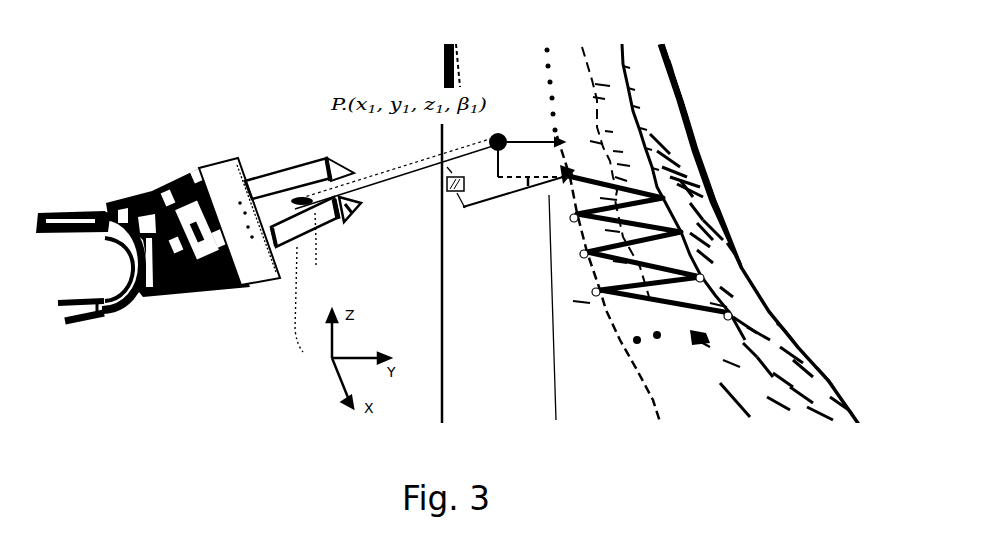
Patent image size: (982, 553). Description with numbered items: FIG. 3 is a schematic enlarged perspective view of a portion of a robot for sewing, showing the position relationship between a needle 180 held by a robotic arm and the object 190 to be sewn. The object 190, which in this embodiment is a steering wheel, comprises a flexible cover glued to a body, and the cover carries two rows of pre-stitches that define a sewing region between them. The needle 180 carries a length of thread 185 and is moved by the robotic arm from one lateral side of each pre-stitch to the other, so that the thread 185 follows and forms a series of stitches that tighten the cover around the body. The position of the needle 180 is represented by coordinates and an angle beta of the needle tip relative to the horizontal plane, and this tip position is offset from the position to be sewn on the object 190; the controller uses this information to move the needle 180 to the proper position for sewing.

The needle 180 is at (383, 177).
The thread 185 is at (295, 330).
The object 190 is at (667, 62).